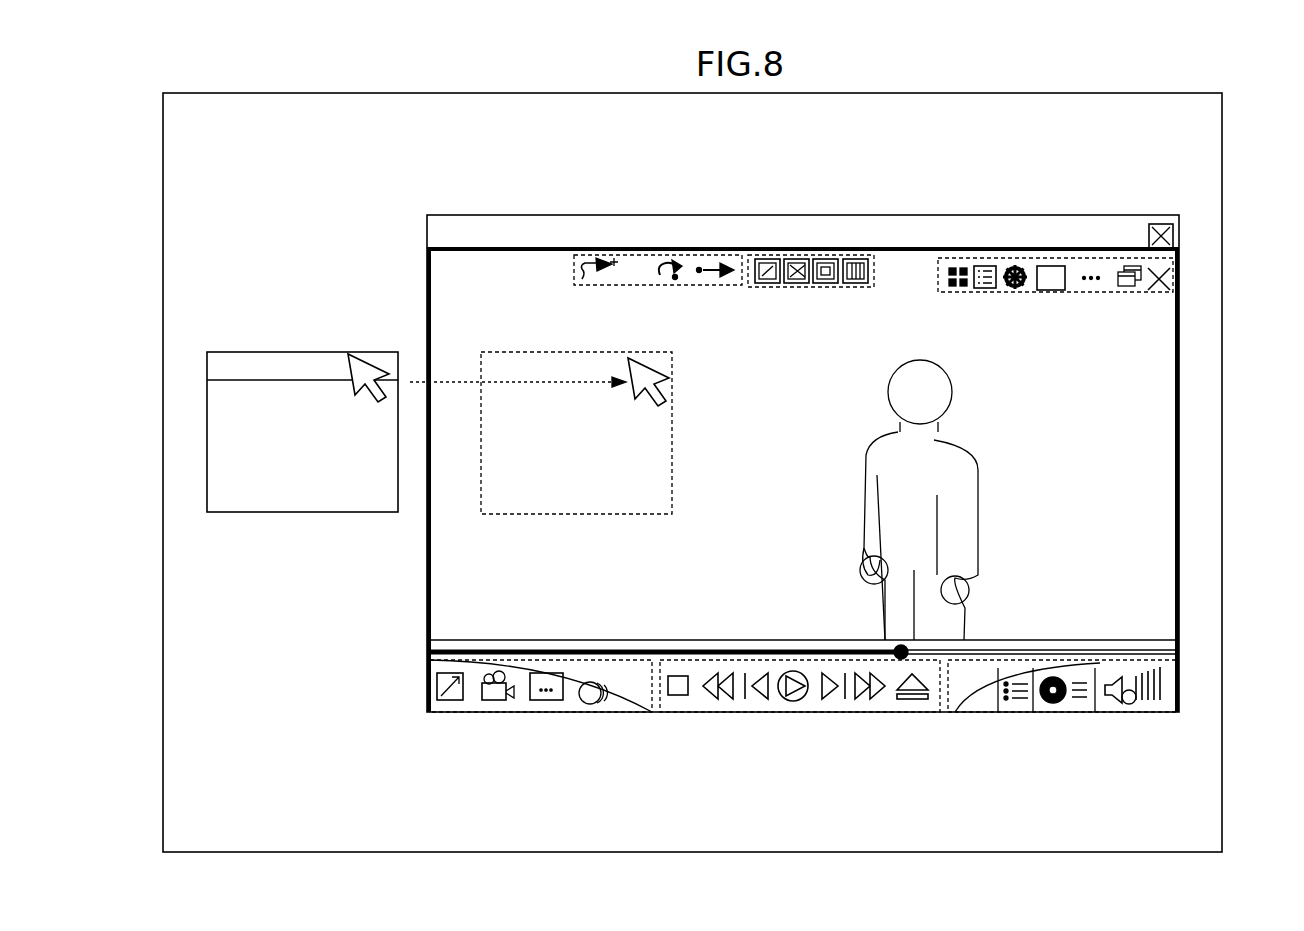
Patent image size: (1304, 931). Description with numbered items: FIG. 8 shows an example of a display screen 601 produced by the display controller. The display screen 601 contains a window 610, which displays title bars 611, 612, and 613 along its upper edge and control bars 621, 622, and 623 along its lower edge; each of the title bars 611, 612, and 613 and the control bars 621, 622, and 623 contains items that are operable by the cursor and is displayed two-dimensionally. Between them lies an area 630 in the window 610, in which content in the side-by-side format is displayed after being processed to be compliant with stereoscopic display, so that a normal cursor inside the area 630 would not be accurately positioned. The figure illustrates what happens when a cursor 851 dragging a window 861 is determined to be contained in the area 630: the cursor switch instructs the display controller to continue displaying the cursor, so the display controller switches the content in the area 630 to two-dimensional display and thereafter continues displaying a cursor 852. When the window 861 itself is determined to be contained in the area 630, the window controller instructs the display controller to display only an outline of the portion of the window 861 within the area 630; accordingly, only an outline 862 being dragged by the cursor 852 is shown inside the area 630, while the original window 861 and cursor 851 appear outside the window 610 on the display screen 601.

The display screen 601 is at (1222, 336).
The window 610 is at (1172, 206).
The title bar 611 is at (651, 255).
The title bar 612 is at (812, 255).
The title bar 613 is at (1073, 267).
The area 630 is at (1180, 434).
The control bar 621 is at (520, 701).
The control bar 622 is at (698, 701).
The control bar 623 is at (975, 701).
The cursor 851 is at (364, 354).
The cursor 852 is at (647, 356).
The window 861 is at (312, 514).
The outline 862 is at (577, 515).